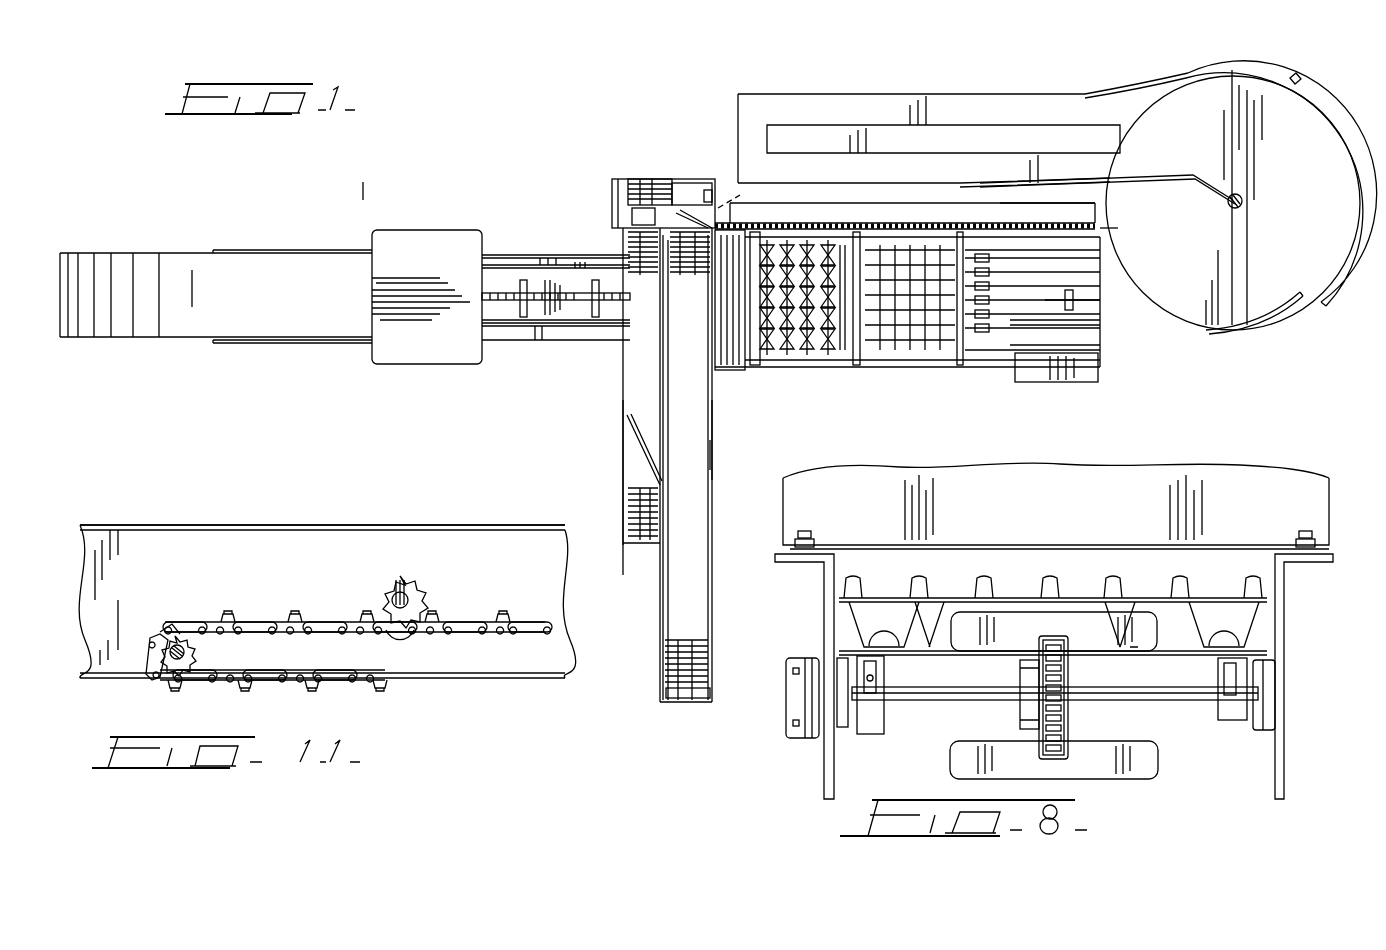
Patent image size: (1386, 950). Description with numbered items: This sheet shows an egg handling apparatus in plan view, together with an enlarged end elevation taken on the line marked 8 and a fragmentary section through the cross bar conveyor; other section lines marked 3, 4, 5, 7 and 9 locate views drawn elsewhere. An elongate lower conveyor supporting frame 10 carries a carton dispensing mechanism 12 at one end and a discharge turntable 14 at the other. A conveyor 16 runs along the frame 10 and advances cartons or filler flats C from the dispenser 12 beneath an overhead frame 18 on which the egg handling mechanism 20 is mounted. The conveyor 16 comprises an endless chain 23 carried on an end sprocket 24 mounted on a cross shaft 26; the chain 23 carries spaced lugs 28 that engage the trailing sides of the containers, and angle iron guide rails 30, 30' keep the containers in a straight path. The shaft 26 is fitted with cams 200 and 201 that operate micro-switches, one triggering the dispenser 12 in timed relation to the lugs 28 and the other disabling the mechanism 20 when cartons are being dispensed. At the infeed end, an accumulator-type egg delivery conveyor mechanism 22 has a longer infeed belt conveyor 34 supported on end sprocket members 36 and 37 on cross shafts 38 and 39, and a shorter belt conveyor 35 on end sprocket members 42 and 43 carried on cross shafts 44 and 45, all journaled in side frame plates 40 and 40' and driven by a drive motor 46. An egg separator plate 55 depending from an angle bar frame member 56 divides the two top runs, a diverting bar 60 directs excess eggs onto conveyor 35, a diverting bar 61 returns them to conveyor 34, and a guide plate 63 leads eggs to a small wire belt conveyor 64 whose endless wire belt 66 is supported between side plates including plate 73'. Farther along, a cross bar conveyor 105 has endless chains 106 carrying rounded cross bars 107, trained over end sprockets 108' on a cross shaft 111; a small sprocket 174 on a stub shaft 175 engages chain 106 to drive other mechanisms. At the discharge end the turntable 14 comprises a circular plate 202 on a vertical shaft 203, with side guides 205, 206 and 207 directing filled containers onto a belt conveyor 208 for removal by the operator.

In FIG. 1, the section line 3- 3 is at (640, 165).
In FIG. 1, the section line 4- 4 is at (366, 218).
In FIG. 1, the section line 5- 5 is at (620, 312).
In FIG. 1, the section line 7-7 / end block 7 is at (1120, 228).
In FIG. 1, the section line 8- 8 is at (388, 193).
In FIG. 1, the direction arrow 9 is at (770, 213).
In FIG. 1, the lower conveyor supporting frame 10 is at (525, 343).
In FIG. 1, the carton dispensing mechanism 12 is at (438, 228).
In FIG. 8, the carton dispensing mechanism 12 is at (1230, 478).
In FIG. 1, the discharge turntable 14 is at (1272, 65).
In FIG. 1, the conveyor 16 is at (533, 283).
In FIG. 1, the overhead frame 18 is at (768, 368).
In FIG. 1, the egg handling mechanism 20 is at (797, 368).
In FIG. 1, the accumulator-type egg delivery conveyor mechanism 22 is at (690, 165).
In FIG. 1, the endless chain 23 is at (553, 302).
In FIG. 8, the endless chain 23 is at (1070, 715).
In FIG. 8, the end sprocket 24 is at (1030, 706).
In FIG. 8, the cross shaft 26 is at (918, 701).
In FIG. 1, the lug 28 is at (593, 283).
In FIG. 8, the lug 28 is at (1095, 615).
In FIG. 1, the guide rail forming angle iron member 30 is at (556, 244).
In FIG. 1, the guide rail forming angle iron member 30' is at (556, 350).
In FIG. 1, the infeed belt conveyor 34 is at (700, 488).
In FIG. 1, the belt conveyor 35 is at (635, 468).
In FIG. 1, the end sprocket member 36 is at (700, 702).
In FIG. 1, the end sprocket member 37 is at (685, 225).
In FIG. 1, the cross shaft 38 is at (708, 693).
In FIG. 1, the cross shaft 39 is at (720, 200).
In FIG. 1, the side frame plate 40 is at (622, 385).
In FIG. 1, the side frame plate 40' is at (743, 440).
In FIG. 1, the end sprocket member 42 is at (621, 569).
In FIG. 1, the end sprocket member 43 is at (638, 180).
In FIG. 1, the cross shaft 44 is at (628, 530).
In FIG. 1, the cross shaft 45 is at (680, 185).
In FIG. 1, the drive motor 46 is at (628, 215).
In FIG. 1, the egg separator plate 55 is at (672, 398).
In FIG. 1, the angle bar frame member 56 is at (670, 356).
In FIG. 1, the diverting bar 60 is at (742, 193).
In FIG. 1, the diverting bar 61 is at (638, 446).
In FIG. 1, the guide plate 63 is at (713, 455).
In FIG. 1, the wire belt conveyor 64 is at (714, 352).
In FIG. 1, the endless wire belt 66 is at (730, 235).
In FIG. 11, the side frame plate 73' is at (322, 520).
In FIG. 11, the cross bar conveyor 105 is at (268, 606).
In FIG. 11, the endless chain 106 is at (482, 622).
In FIG. 11, the cross bar 107 is at (225, 618).
In FIG. 11, the end sprocket 108' is at (149, 639).
In FIG. 11, the cross shaft 111 is at (205, 654).
In FIG. 11, the small sprocket 174 is at (420, 588).
In FIG. 11, the stub shaft 175 is at (400, 583).
In FIG. 8, the cam 200 is at (870, 736).
In FIG. 8, the cam 201 is at (1228, 722).
In FIG. 1, the circular plate 202 is at (1328, 140).
In FIG. 1, the vertical shaft 203 is at (1242, 200).
In FIG. 1, the side guide 205 is at (1268, 320).
In FIG. 1, the side guide 206 is at (1318, 102).
In FIG. 1, the side guide 207 is at (1165, 180).
In FIG. 1, the belt conveyor 208 is at (1022, 135).
In FIG. 8, the cartons or filler flats C is at (976, 593).